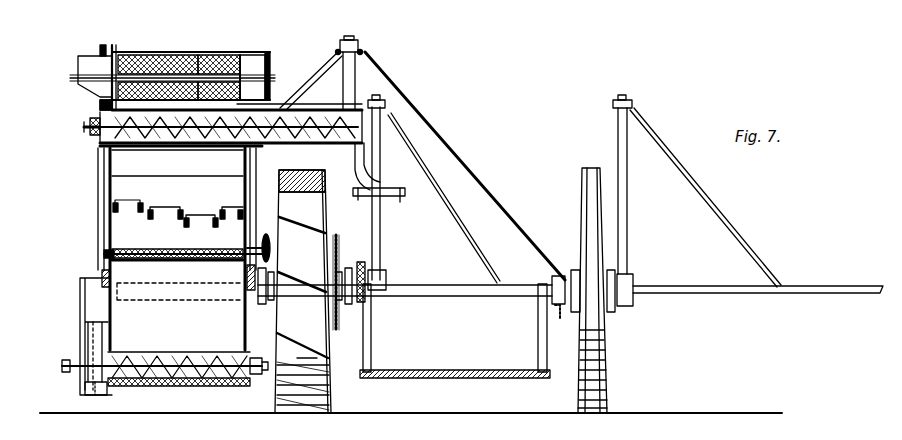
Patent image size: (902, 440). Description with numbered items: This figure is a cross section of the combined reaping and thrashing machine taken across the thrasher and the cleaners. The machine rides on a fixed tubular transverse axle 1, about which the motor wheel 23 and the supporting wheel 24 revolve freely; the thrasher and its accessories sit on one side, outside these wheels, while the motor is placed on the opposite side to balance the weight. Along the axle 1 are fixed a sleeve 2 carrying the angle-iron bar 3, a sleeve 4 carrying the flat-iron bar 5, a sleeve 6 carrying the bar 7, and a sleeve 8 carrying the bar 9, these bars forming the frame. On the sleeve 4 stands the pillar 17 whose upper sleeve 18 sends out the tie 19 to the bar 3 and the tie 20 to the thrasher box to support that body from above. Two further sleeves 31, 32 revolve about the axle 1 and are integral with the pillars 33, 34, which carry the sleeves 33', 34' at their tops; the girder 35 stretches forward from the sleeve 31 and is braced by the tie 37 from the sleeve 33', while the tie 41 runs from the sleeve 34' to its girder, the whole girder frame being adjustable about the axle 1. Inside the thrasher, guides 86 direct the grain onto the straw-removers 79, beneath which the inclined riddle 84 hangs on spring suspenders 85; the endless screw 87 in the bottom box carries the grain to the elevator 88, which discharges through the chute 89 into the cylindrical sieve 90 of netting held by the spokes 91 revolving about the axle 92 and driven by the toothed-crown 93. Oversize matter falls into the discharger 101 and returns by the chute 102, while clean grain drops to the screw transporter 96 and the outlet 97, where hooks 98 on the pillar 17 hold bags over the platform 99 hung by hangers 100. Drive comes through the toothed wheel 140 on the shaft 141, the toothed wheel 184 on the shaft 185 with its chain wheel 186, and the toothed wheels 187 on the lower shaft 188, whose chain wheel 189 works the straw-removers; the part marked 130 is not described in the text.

The fixed transverse axle 1 is at (470, 290).
The sleeve 2 is at (552, 274).
The bar of angle-iron 3 is at (560, 314).
The sleeve 4 is at (349, 305).
The bar of flat-iron 5 is at (362, 264).
The sleeve 6 is at (256, 306).
The bar 7 is at (246, 278).
The sleeve 8 is at (119, 302).
The bar 9 is at (102, 275).
The pillar 17 is at (358, 46).
The sleeve 18 is at (362, 53).
The tie 19 is at (437, 132).
The tie 20 is at (316, 78).
The motor wheel 23 is at (303, 291).
The supporting wheel 24 is at (606, 336).
The sleeve 31 is at (634, 282).
The sleeve 32 is at (386, 280).
The pillar 33 is at (638, 191).
The sleeve 33' is at (606, 105).
The pillar 34 is at (394, 193).
The sleeve 34' is at (407, 93).
The girder 35 is at (753, 294).
The tie 37 is at (676, 152).
The tie 41 is at (458, 232).
The straw-removers 79 is at (196, 214).
The inclined riddle 84 is at (168, 260).
The spring suspenders 85 is at (98, 185).
The guides 86 is at (112, 163).
The endless screw 87 is at (176, 383).
The elevator 88 is at (94, 395).
The chute 89 is at (78, 65).
The cylindrical sieve 90 is at (186, 56).
The spokes 91 is at (252, 58).
The axle 92 is at (208, 57).
The toothed-crown 93 is at (106, 53).
The endless screw transporter 96 is at (298, 113).
The outlet 97 is at (359, 164).
The hooks 98 is at (386, 186).
The platform 99 is at (466, 379).
The hangers 100 is at (372, 345).
The discharger 101 is at (272, 66).
The chute 102 is at (240, 58).
The drive chain 130 is at (336, 332).
The toothed wheel 140 is at (270, 246).
The shaft 141 is at (260, 240).
The toothed wheel 184 is at (88, 130).
The shaft 185 is at (90, 124).
The chain wheel 186 is at (100, 104).
The toothed wheels 187 is at (85, 350).
The lower shaft 188 is at (128, 386).
The chain wheel 189 is at (258, 375).